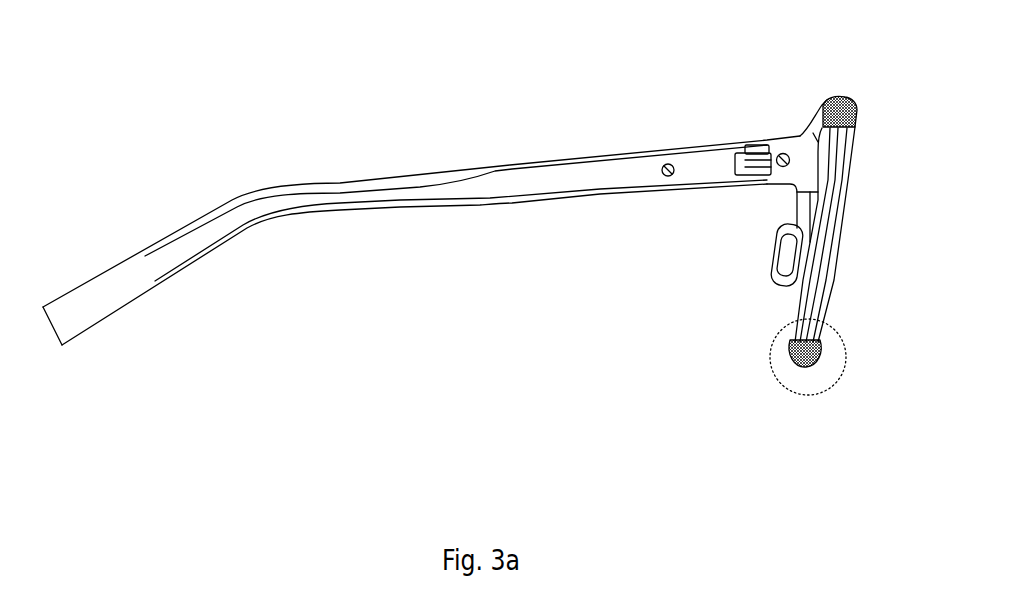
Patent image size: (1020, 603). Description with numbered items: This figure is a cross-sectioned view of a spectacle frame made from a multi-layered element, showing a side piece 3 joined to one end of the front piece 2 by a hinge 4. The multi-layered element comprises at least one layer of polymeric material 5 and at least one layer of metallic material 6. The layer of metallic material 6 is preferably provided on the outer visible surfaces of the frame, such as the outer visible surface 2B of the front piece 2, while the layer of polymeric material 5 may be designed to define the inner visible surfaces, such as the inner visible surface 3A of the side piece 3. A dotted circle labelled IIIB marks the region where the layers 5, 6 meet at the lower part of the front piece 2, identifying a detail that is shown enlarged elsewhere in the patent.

The front piece 2 is at (870, 97).
The outer visible surface of the front piece 2B is at (847, 237).
The side piece 3 is at (292, 177).
The inner visible surface of the side piece 3A is at (601, 172).
The hinge 4 is at (753, 153).
The layer of polymeric material 5 is at (477, 187).
The layer of metallic material 6 is at (820, 364).
The detail view circle IIIB is at (792, 392).